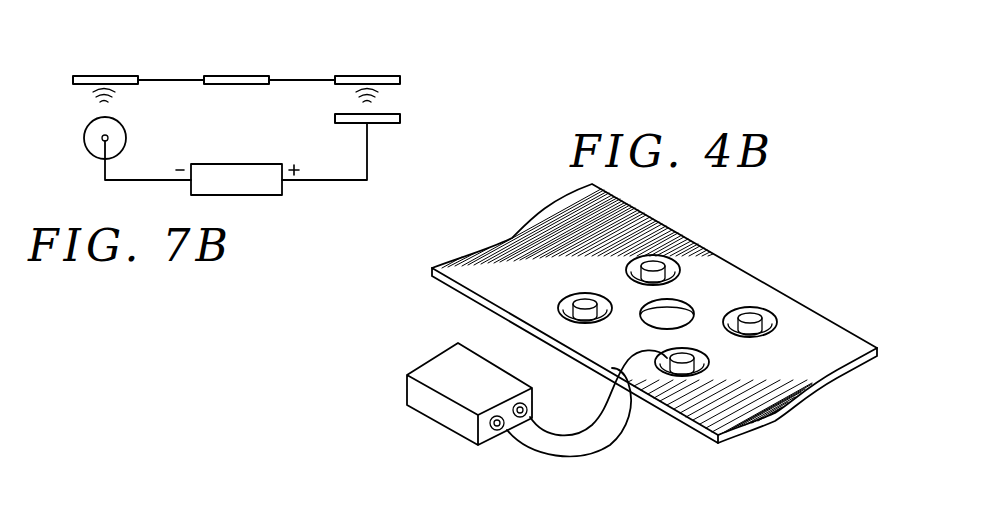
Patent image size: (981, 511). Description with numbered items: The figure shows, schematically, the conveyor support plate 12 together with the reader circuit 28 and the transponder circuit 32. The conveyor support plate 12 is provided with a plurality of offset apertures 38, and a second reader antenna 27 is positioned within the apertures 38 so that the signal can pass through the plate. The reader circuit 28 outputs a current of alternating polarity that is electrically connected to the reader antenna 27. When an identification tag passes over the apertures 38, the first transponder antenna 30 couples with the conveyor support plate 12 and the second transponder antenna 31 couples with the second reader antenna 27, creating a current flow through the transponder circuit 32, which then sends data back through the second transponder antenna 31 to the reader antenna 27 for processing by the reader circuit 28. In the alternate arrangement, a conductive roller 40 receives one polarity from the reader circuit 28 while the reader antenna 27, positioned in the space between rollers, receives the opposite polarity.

In FIG. 4B, the conveyor support plate 12 is at (813, 338).
In FIG. 7B, the second reader antenna 27 is at (382, 123).
In FIG. 4B, the second reader antenna 27 is at (584, 303).
In FIG. 7B, the reader circuit 28 is at (236, 195).
In FIG. 4B, the reader circuit 28 is at (453, 416).
In FIG. 7B, the first transponder antenna 30 is at (103, 75).
In FIG. 7B, the second transponder antenna 31 is at (367, 75).
In FIG. 7B, the transponder circuit 32 is at (236, 75).
In FIG. 4B, the offset apertures 38 is at (560, 305).
In FIG. 7B, the conductive roller 40 is at (87, 149).